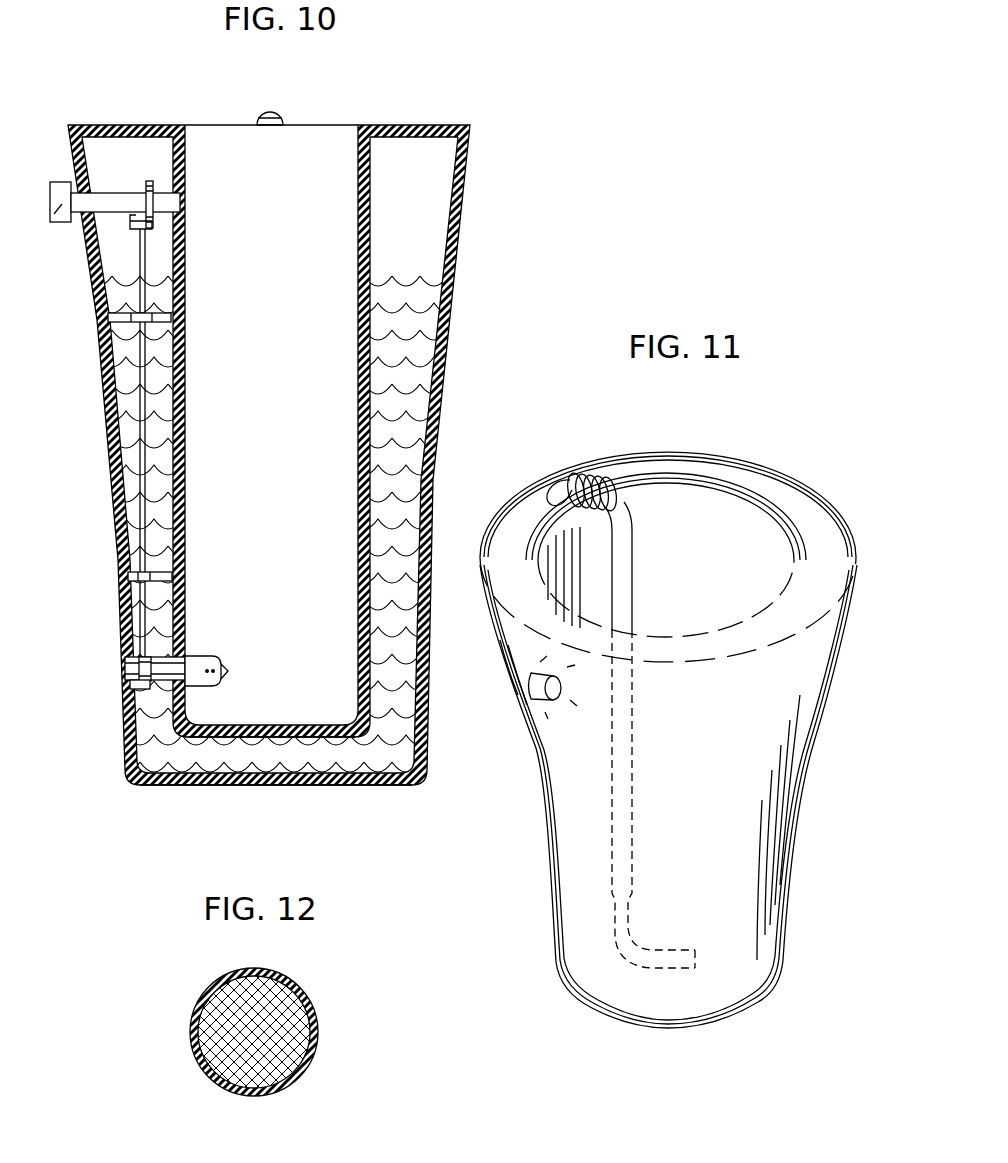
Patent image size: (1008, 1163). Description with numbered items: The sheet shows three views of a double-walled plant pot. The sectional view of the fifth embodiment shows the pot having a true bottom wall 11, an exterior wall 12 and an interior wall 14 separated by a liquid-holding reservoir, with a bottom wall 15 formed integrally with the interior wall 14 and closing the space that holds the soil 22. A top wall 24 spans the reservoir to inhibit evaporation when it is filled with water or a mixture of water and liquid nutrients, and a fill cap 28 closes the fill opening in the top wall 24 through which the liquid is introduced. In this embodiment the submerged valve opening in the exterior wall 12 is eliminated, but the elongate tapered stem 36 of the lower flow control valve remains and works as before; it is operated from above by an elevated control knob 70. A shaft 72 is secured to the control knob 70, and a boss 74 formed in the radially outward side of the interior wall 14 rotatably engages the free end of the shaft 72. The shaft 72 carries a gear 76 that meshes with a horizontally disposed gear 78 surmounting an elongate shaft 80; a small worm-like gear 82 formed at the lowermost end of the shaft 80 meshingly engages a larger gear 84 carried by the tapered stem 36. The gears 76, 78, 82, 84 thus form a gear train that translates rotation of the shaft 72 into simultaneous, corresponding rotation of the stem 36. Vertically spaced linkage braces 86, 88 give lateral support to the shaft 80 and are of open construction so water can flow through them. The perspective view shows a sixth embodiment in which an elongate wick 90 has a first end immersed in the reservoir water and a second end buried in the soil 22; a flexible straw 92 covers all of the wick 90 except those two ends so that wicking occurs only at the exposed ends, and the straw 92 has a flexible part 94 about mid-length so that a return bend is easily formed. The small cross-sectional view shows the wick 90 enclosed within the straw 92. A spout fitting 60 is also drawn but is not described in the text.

In FIG. 10, the true bottom wall 11 is at (378, 788).
In FIG. 10, the exterior wall 12 is at (467, 194).
In FIG. 11, the exterior wall 12 is at (810, 697).
In FIG. 10, the interior wall 14 is at (185, 233).
In FIG. 11, the interior wall 14 is at (745, 543).
In FIG. 10, the bottom wall 15 is at (257, 737).
In FIG. 10, the soil 22 is at (268, 532).
In FIG. 10, the top wall 24 is at (410, 123).
In FIG. 11, the top wall 24 is at (777, 490).
In FIG. 10, the fill cap 28 is at (278, 103).
In FIG. 10, the elongate tapered stem 36 is at (168, 663).
In FIG. 10, the spout fitting 60 is at (207, 655).
In FIG. 10, the elevated control knob 70 is at (62, 218).
In FIG. 11, the elevated control knob 70 is at (535, 672).
In FIG. 10, the shaft 72 is at (123, 195).
In FIG. 10, the boss 74 is at (157, 180).
In FIG. 10, the gear 76 is at (150, 182).
In FIG. 10, the horizontally disposed gear 78 is at (128, 231).
In FIG. 10, the elongate shaft 80 is at (145, 402).
In FIG. 10, the worm-like gear 82 is at (138, 665).
In FIG. 10, the larger gear 84 is at (135, 690).
In FIG. 10, the linkage brace 86 is at (108, 338).
In FIG. 10, the linkage brace 88 is at (172, 568).
In FIG. 11, the elongate wick 90 is at (652, 950).
In FIG. 12, the elongate wick 90 is at (248, 1045).
In FIG. 11, the flexible straw 92 is at (633, 583).
In FIG. 12, the flexible straw 92 is at (218, 982).
In FIG. 11, the flexible part 94 is at (583, 470).